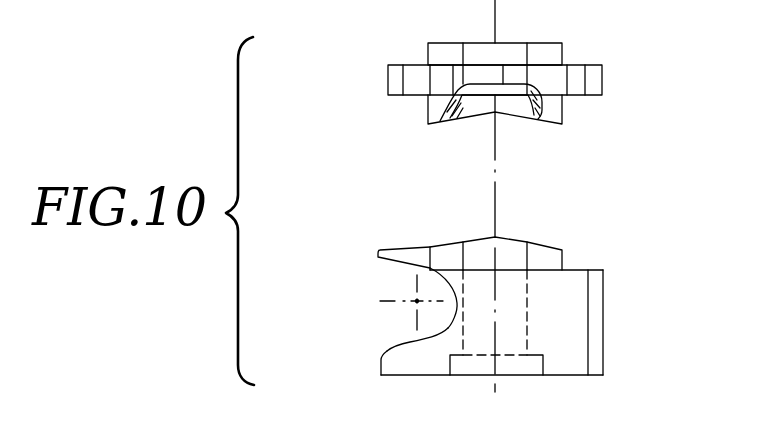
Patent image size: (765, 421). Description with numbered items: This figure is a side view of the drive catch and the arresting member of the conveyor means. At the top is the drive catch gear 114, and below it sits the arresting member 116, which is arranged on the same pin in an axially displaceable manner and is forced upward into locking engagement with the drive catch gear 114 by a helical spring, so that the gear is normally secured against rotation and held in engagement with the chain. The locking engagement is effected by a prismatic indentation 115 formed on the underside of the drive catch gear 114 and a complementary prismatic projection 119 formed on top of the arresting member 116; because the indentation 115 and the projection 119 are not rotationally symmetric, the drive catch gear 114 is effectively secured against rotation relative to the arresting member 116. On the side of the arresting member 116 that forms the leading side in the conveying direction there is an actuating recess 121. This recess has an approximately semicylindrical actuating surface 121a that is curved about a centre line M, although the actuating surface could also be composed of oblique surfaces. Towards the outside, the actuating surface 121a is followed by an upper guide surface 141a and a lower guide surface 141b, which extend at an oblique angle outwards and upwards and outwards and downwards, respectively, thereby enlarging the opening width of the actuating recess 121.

The drive catch gear 114 is at (592, 78).
The prismatic indentation 115 is at (543, 122).
The prismatic projection 119 is at (540, 257).
The arresting member 116 is at (577, 362).
The upper guide surface 141a is at (403, 262).
The actuating recess 121 is at (398, 292).
The centre line M is at (416, 302).
The actuating surface 121a is at (446, 322).
The lower guide surface 141b is at (381, 357).